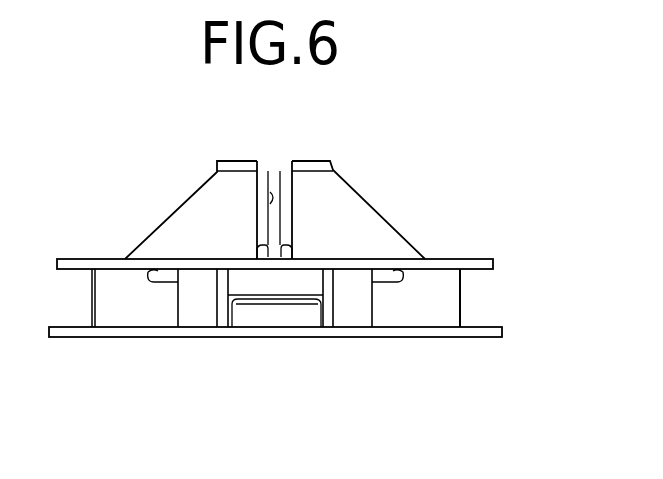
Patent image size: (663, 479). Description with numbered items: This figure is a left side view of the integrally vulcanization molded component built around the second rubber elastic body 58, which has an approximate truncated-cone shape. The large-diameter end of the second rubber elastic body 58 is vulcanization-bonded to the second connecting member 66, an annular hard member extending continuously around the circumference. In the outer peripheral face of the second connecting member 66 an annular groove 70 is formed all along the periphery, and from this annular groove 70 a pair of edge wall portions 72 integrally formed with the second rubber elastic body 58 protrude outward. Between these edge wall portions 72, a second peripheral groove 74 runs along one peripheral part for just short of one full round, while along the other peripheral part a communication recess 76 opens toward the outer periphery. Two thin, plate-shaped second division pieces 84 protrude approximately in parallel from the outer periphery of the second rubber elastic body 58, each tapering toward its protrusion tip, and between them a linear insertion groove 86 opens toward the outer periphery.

The second rubber elastic body 58 is at (370, 243).
The second connecting member 66 is at (104, 259).
The annular groove 70 is at (405, 305).
The edge wall portions 72 is at (200, 308).
The second peripheral groove 74 is at (136, 327).
The communication recess 76 is at (292, 323).
The second division piece 84 is at (262, 228).
The linear insertion groove 86 is at (270, 198).